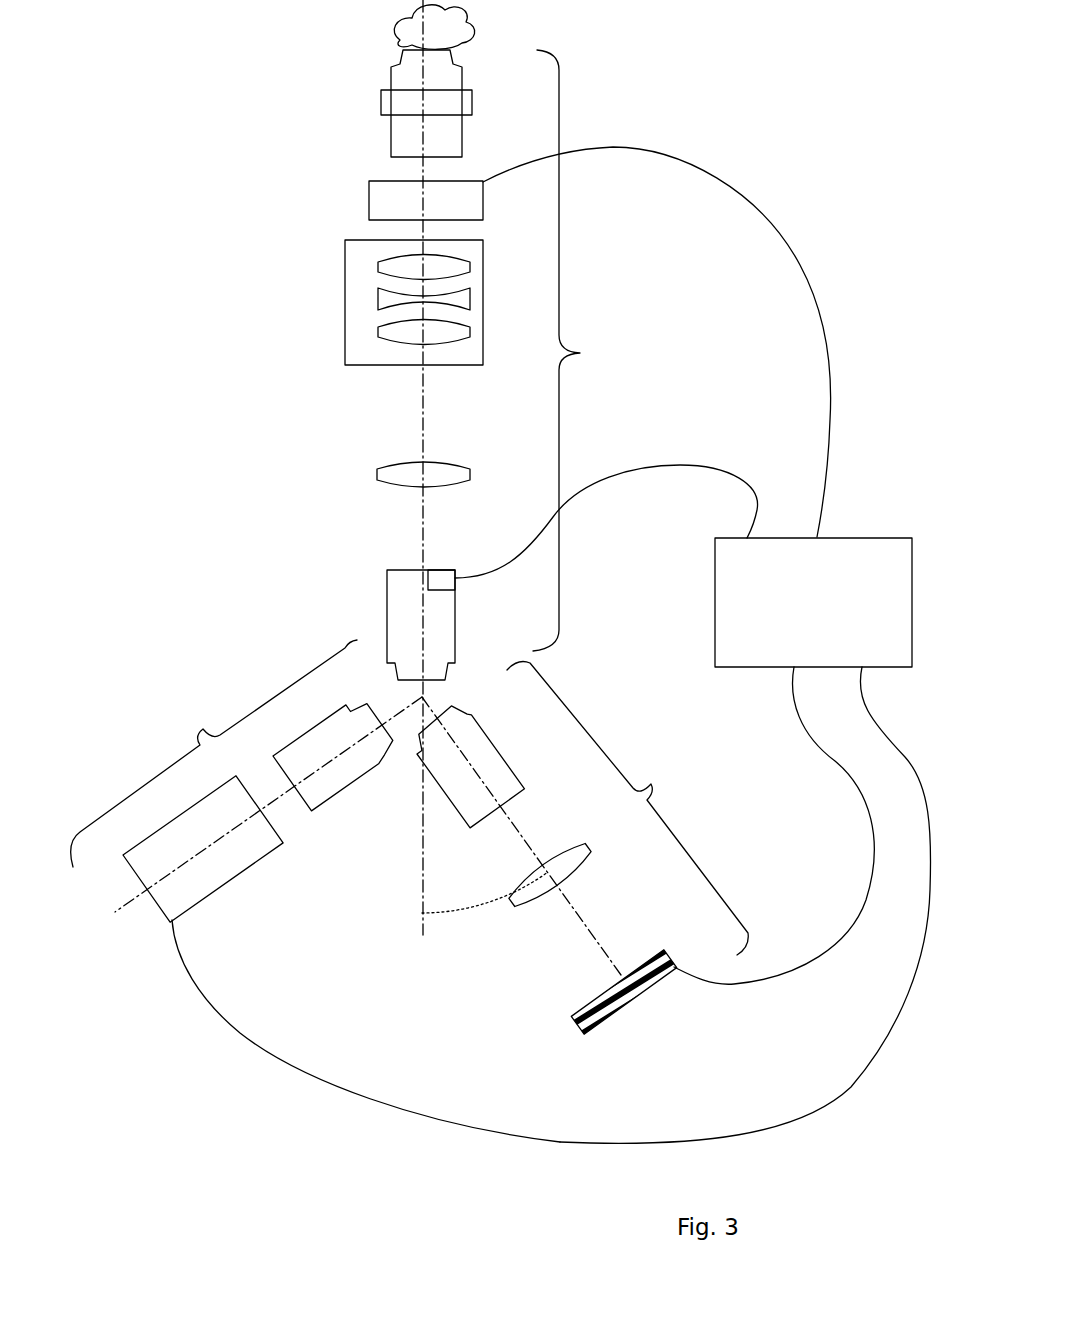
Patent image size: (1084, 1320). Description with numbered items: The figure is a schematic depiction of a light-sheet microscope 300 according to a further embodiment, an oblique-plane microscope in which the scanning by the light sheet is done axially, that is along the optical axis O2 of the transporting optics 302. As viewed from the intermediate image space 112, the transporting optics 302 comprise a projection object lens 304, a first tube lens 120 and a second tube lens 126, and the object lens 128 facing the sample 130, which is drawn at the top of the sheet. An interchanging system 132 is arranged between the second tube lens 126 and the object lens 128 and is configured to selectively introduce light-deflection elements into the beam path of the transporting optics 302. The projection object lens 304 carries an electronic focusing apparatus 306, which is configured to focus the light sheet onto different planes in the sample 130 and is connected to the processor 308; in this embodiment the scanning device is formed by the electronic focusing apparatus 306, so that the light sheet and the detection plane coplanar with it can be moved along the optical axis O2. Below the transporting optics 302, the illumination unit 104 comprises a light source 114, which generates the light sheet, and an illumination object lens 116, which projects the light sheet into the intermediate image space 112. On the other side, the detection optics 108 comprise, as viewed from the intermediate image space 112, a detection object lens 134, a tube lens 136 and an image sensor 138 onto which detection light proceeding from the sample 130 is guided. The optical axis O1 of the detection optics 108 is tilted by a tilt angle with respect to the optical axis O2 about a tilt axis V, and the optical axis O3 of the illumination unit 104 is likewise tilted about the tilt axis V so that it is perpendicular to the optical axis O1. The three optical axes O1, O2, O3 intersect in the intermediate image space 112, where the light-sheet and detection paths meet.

The light-sheet microscope 300 is at (757, 131).
The transporting optics 302 is at (582, 352).
The projection object lens 304 is at (455, 618).
The electronic focusing apparatus 306 is at (443, 579).
The processor 308 is at (683, 724).
The illumination unit 104 is at (203, 728).
The detection optics 108 is at (651, 784).
The intermediate image space 112 is at (383, 690).
The light source 114 is at (170, 820).
The illumination object lens 116 is at (307, 730).
The tube lens 120 is at (377, 470).
The second tube lens 126 is at (345, 278).
The object lens 128 is at (390, 127).
The sample 130 is at (397, 24).
The interchanging system 132 is at (369, 192).
The detection object lens 134 is at (509, 767).
The tube lens 136 is at (588, 850).
The image sensor 138 is at (573, 1013).
The optical axis of the detection optics O1 is at (589, 932).
The optical axis of the transporting optics O2 is at (424, 424).
The optical axis of the illumination unit O3 is at (276, 802).
The tilt axis V is at (420, 702).